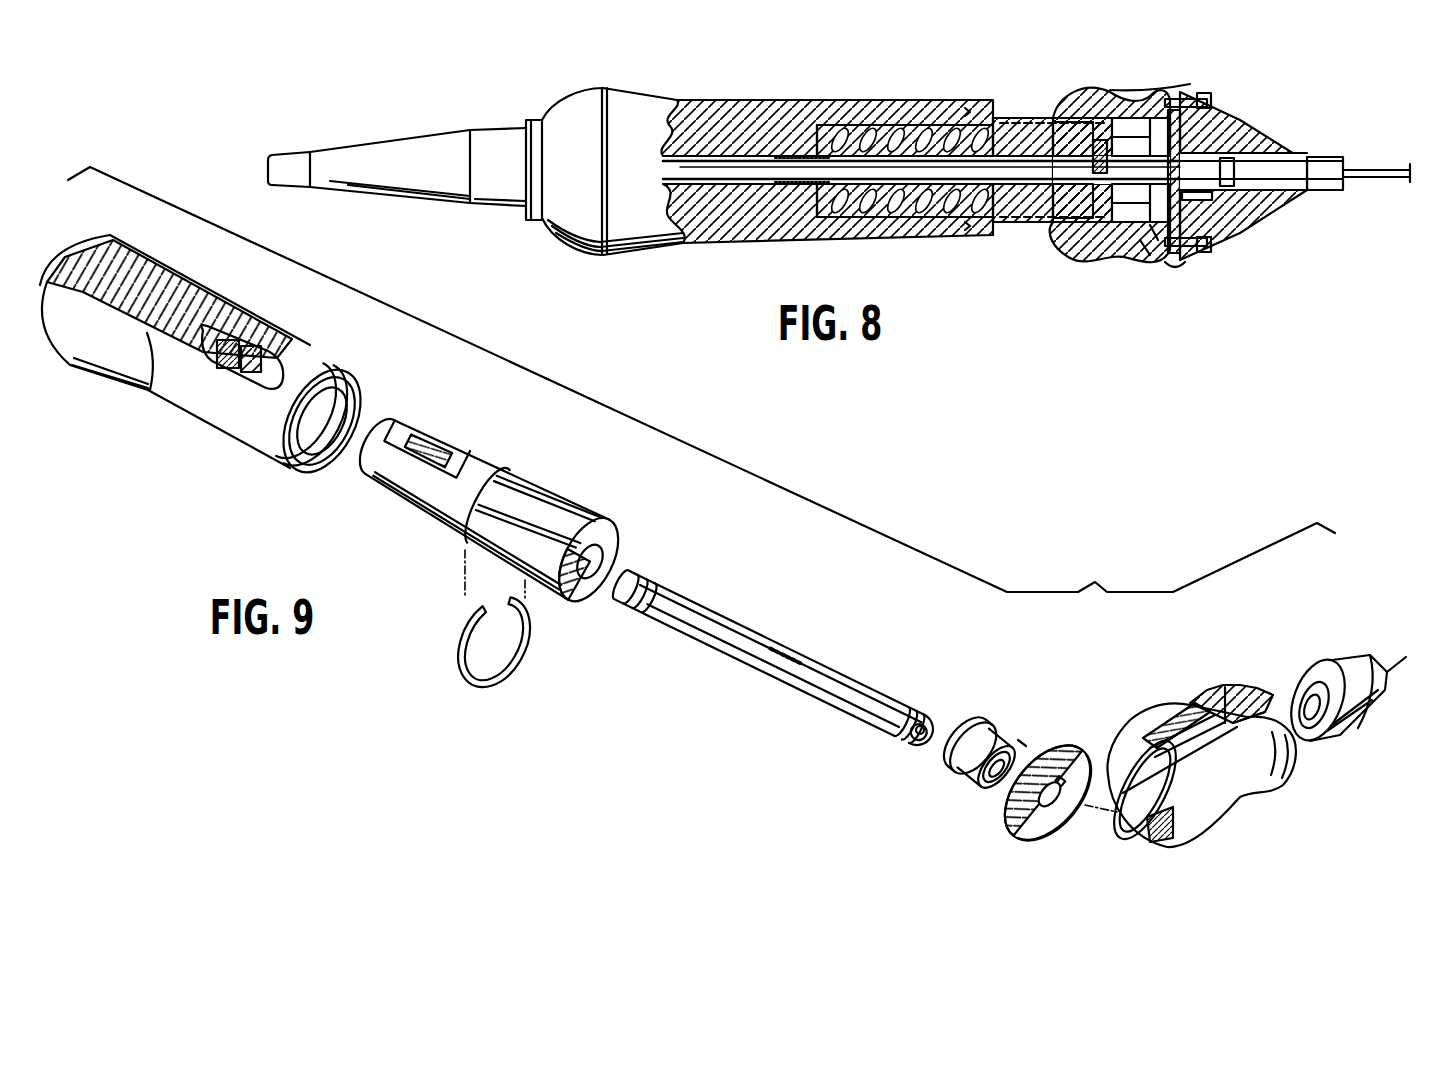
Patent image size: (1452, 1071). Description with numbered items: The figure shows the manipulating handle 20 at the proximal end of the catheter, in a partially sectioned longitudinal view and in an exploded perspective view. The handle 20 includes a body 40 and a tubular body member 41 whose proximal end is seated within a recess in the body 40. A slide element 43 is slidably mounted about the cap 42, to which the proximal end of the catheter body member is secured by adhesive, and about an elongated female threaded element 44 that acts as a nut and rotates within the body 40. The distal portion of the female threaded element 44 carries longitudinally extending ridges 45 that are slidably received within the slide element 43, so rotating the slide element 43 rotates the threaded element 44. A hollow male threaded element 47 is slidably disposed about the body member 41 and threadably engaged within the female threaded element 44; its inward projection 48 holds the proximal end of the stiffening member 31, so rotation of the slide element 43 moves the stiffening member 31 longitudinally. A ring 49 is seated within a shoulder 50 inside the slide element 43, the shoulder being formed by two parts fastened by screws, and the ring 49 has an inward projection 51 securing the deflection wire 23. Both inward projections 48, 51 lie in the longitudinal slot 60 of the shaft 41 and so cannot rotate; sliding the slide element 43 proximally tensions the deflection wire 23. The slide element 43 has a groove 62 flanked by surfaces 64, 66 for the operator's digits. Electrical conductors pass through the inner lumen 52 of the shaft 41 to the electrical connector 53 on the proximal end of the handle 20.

In FIG. 8, the manipulating handle 20 is at (638, 66).
In FIG. 9, the manipulating handle 20 is at (701, 379).
In FIG. 8, the deflection wire 23 is at (1205, 104).
In FIG. 8, the stiffening member 31 is at (1153, 232).
In FIG. 8, the body 40 is at (762, 237).
In FIG. 9, the body 40 is at (207, 414).
In FIG. 8, the tubular body member 41 is at (842, 220).
In FIG. 9, the tubular body member 41 is at (812, 683).
In FIG. 8, the cap 42 is at (1262, 150).
In FIG. 9, the cap 42 is at (1325, 660).
In FIG. 8, the slide element 43 is at (1192, 78).
In FIG. 9, the slide element 43 is at (1240, 782).
In FIG. 8, the female threaded element 44 is at (930, 218).
In FIG. 9, the female threaded element 44 is at (592, 585).
In FIG. 8, the longitudinally extending ridges 45 is at (1010, 225).
In FIG. 9, the longitudinally extending ridges 45 is at (538, 492).
In FIG. 8, the hollow male threaded element 47 is at (1052, 122).
In FIG. 9, the hollow male threaded element 47 is at (962, 775).
In FIG. 8, the inward projection 48 is at (1087, 120).
In FIG. 9, the inward projection 48 is at (1022, 742).
In FIG. 8, the ring 49 is at (1167, 140).
In FIG. 9, the ring 49 is at (1017, 824).
In FIG. 8, the shoulder 50 is at (1185, 200).
In FIG. 9, the shoulder 50 is at (1243, 688).
In FIG. 9, the inward projection 51 is at (1085, 748).
In FIG. 8, the inner lumen 52 is at (865, 168).
In FIG. 9, the inner lumen 52 is at (940, 728).
In FIG. 8, the electrical connector 53 is at (428, 134).
In FIG. 8, the longitudinal slot 60 is at (937, 155).
In FIG. 9, the longitudinal slot 60 is at (718, 611).
In FIG. 8, the groove 62 is at (1147, 248).
In FIG. 9, the groove 62 is at (1200, 695).
In FIG. 8, the surface 64 is at (1122, 260).
In FIG. 9, the surface 64 is at (1180, 704).
In FIG. 8, the surface 66 is at (1180, 262).
In FIG. 9, the surface 66 is at (1200, 698).